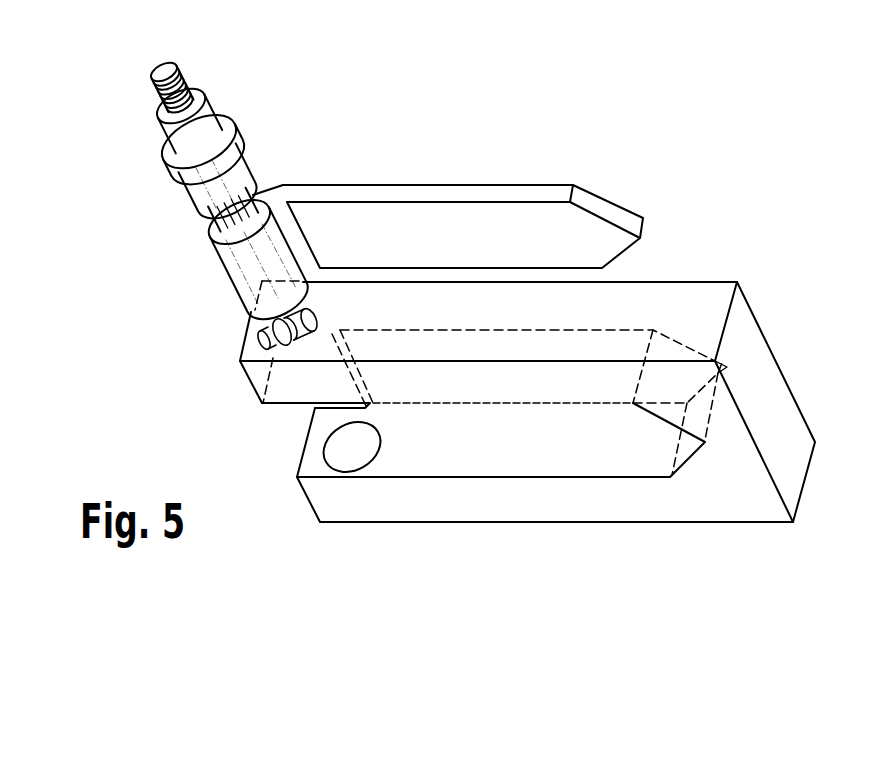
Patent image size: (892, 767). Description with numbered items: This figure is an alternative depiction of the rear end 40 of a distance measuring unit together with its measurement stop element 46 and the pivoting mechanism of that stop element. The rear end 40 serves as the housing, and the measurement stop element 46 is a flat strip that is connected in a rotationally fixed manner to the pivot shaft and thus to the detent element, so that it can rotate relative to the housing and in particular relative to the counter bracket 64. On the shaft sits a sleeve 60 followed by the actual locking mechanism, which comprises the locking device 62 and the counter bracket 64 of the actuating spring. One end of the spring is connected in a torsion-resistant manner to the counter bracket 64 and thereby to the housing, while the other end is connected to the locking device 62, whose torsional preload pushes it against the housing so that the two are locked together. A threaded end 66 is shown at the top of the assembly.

The rear end of the range finder 40 is at (705, 503).
The measurement stop element 46 is at (500, 218).
The sleeve 60 is at (207, 107).
The locking device 62 is at (233, 163).
The counter bracket 64 is at (262, 370).
The threaded end 66 is at (182, 84).